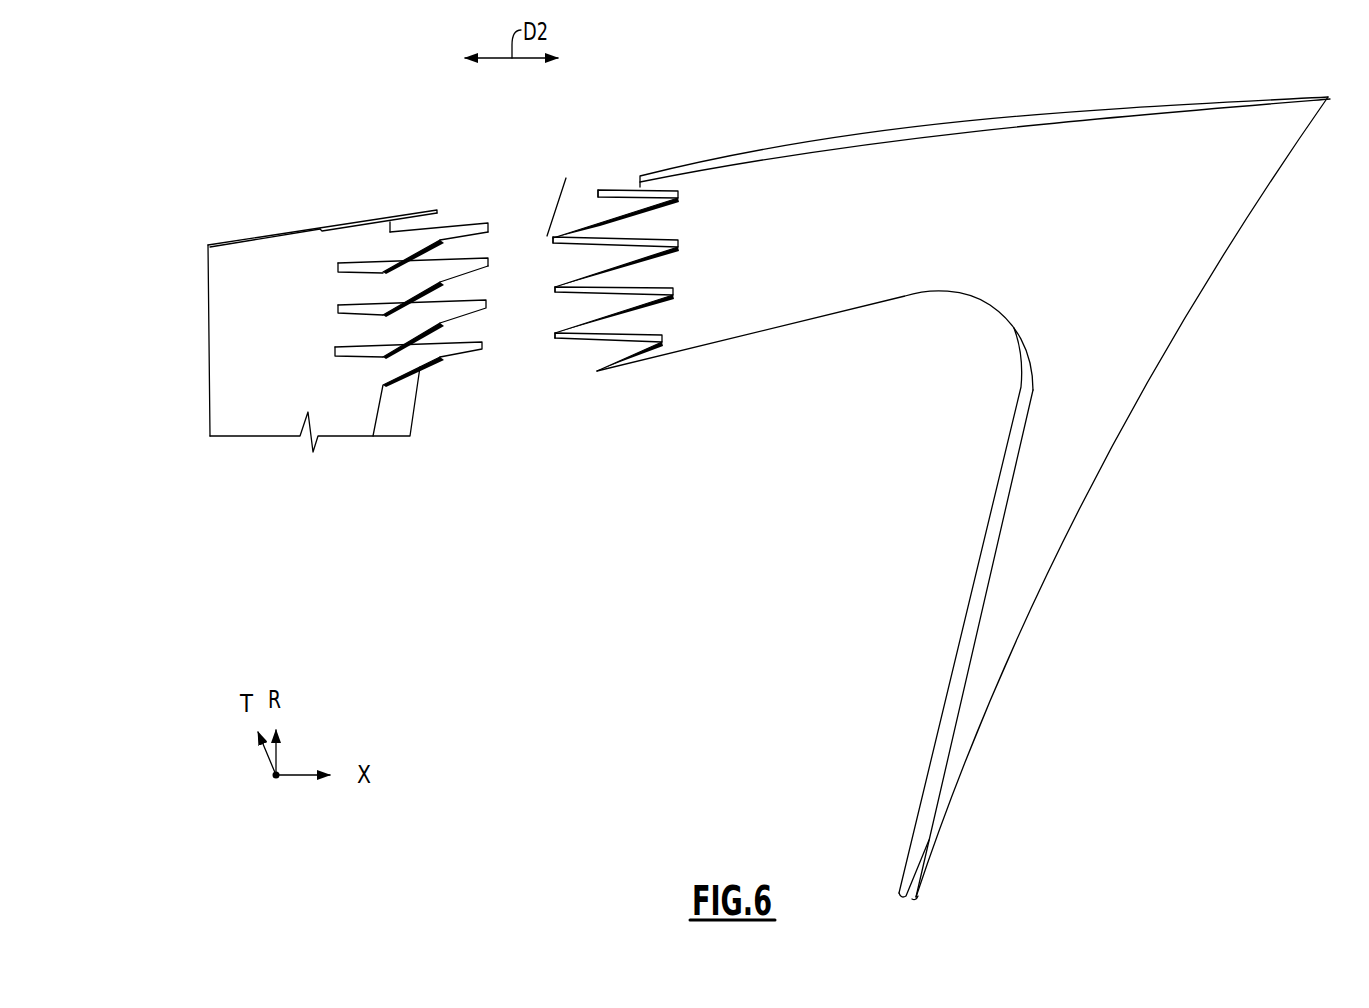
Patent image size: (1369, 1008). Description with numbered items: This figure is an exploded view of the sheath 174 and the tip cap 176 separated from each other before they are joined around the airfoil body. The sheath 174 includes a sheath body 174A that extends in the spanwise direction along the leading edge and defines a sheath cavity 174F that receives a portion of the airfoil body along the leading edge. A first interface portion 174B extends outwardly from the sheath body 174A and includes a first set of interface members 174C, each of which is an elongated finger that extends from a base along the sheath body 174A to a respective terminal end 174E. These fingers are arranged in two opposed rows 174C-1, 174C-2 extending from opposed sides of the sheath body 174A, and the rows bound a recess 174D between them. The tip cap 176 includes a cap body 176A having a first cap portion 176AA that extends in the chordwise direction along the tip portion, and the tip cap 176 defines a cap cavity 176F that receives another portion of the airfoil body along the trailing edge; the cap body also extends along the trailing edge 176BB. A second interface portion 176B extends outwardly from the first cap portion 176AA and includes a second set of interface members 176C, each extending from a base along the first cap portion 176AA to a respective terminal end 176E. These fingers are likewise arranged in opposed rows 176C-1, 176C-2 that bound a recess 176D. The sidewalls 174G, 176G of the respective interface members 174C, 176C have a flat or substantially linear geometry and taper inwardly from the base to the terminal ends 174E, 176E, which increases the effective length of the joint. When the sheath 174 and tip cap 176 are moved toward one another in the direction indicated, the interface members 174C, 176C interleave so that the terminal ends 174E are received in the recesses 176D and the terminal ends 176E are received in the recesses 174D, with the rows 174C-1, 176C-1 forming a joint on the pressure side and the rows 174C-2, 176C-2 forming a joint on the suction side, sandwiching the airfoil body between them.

The sheath 174 is at (243, 222).
The sheath body 174A is at (210, 385).
The first interface portion 174B is at (370, 212).
The first set of interface members 174C is at (452, 345).
The first row of interface members 174C-1 is at (427, 398).
The second row of interface members 174C-2 is at (484, 182).
The recess 174D is at (468, 280).
The terminal end 174E is at (477, 295).
The sheath cavity 174F is at (405, 222).
The sidewalls 174G is at (472, 236).
The tip cap 176 is at (1123, 62).
The cap body 176A is at (904, 129).
The first cap portion 176AA is at (780, 327).
The second interface portion 176B is at (627, 165).
The trailing edge of airfoil 176BB is at (1033, 598).
The second set of interface members 176C is at (591, 340).
The first row of interface members 176C-1 is at (636, 384).
The second row of interface members 176C-2 is at (631, 192).
The recess 176D is at (550, 285).
The terminal end 176E is at (597, 193).
The cap cavity 176F is at (560, 257).
The sidewalls 176G is at (627, 192).